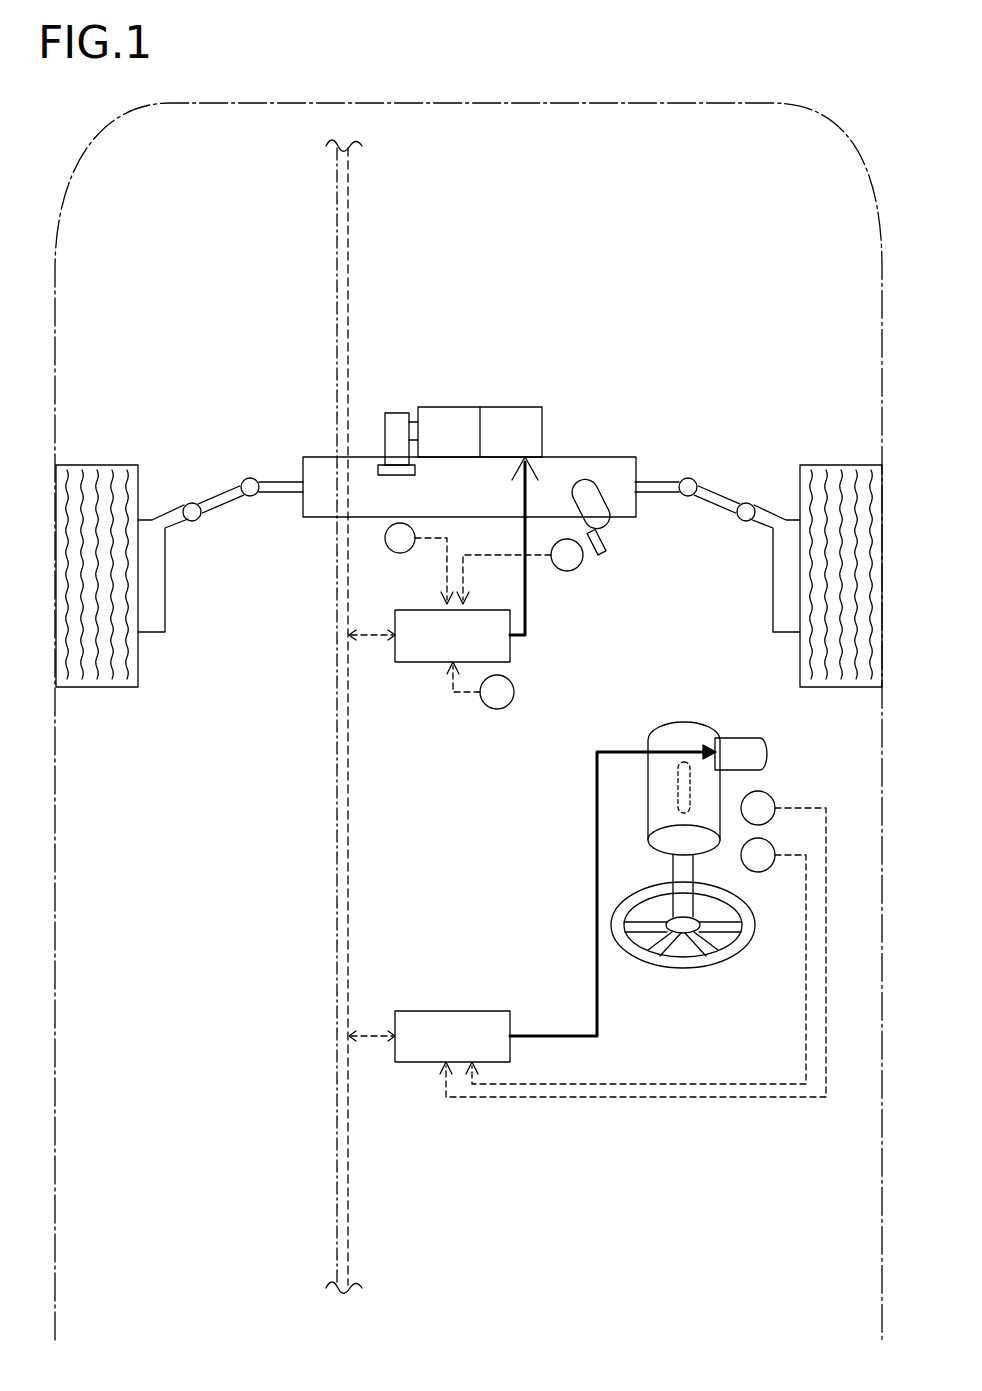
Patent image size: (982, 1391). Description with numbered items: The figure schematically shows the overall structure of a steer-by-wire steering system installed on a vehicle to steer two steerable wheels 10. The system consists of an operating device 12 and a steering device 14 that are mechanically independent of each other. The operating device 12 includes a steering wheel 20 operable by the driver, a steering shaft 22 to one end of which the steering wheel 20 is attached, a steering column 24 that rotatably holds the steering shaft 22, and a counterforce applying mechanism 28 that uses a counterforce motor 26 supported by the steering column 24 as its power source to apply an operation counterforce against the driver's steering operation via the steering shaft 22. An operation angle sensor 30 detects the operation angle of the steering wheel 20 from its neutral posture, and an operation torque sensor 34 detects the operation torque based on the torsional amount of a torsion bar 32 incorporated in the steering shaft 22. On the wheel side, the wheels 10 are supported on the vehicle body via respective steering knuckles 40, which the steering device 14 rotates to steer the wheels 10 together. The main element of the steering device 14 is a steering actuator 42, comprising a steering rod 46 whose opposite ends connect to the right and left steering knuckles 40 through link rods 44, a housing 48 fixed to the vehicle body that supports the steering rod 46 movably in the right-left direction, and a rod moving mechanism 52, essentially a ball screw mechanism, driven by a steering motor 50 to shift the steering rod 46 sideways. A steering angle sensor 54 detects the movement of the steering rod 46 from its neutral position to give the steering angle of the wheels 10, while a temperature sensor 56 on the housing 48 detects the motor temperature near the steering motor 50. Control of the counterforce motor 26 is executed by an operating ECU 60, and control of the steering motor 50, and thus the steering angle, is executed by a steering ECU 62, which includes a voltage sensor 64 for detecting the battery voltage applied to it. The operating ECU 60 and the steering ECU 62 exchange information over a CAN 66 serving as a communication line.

The wheels 10 is at (96, 465).
The operating device 12 is at (735, 1148).
The steering device 14 is at (311, 636).
The steering wheel 20 is at (697, 966).
The steering shaft 22 is at (673, 872).
The steering column 24 is at (654, 778).
The counterforce motor 26 is at (742, 745).
The counterforce applying mechanism 28 is at (735, 705).
The operation angle sensor 30 is at (760, 870).
The torsion bar 32 is at (672, 790).
The operation torque sensor 34 is at (773, 798).
The steering knuckles 40 is at (153, 604).
The steering actuator 42 is at (577, 408).
The link rods 44 is at (226, 509).
The steering rod 46 is at (655, 481).
The housing 48 is at (592, 458).
The steering motor 50 is at (462, 407).
The rod moving mechanism 52 is at (410, 401).
The steering angle sensor 54 is at (578, 567).
The temperature sensor 56 is at (388, 547).
The operating ECU 60 is at (440, 1011).
The steering ECU 62 is at (425, 657).
The voltage sensor 64 is at (504, 703).
The CAN 66 is at (340, 845).